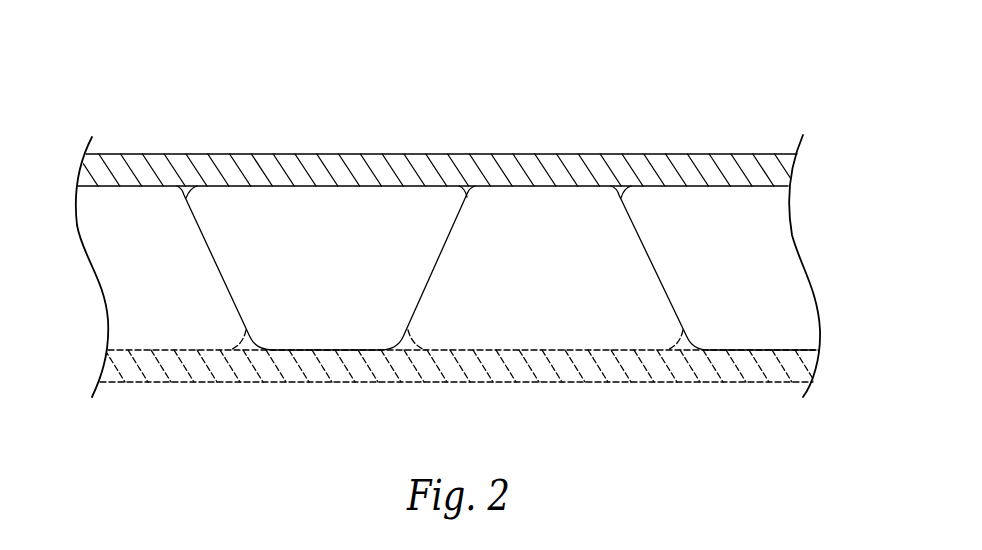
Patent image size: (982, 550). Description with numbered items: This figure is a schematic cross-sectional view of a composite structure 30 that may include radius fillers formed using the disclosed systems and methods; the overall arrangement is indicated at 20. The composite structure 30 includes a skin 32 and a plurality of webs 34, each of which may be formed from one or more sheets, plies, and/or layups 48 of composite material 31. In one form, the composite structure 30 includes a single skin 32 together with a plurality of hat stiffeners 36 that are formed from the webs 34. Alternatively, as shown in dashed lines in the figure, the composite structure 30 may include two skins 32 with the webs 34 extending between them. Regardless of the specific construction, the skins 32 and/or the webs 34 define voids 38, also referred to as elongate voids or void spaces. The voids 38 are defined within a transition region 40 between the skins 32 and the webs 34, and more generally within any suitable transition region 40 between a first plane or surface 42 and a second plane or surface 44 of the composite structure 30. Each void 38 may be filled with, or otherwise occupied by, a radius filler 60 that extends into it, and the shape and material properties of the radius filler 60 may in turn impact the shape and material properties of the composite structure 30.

The composite structure 20 is at (751, 67).
The composite structure 30 is at (773, 99).
The composite material 31 is at (392, 170).
The skin 32 is at (288, 171).
The web 34 is at (224, 248).
The hat stiffener 36 is at (318, 356).
The void 38 is at (183, 182).
The transition region 40 is at (167, 200).
The first plane 42 is at (540, 192).
The second plane 44 is at (628, 237).
The layup 48 is at (407, 260).
The radius filler 60 is at (197, 187).